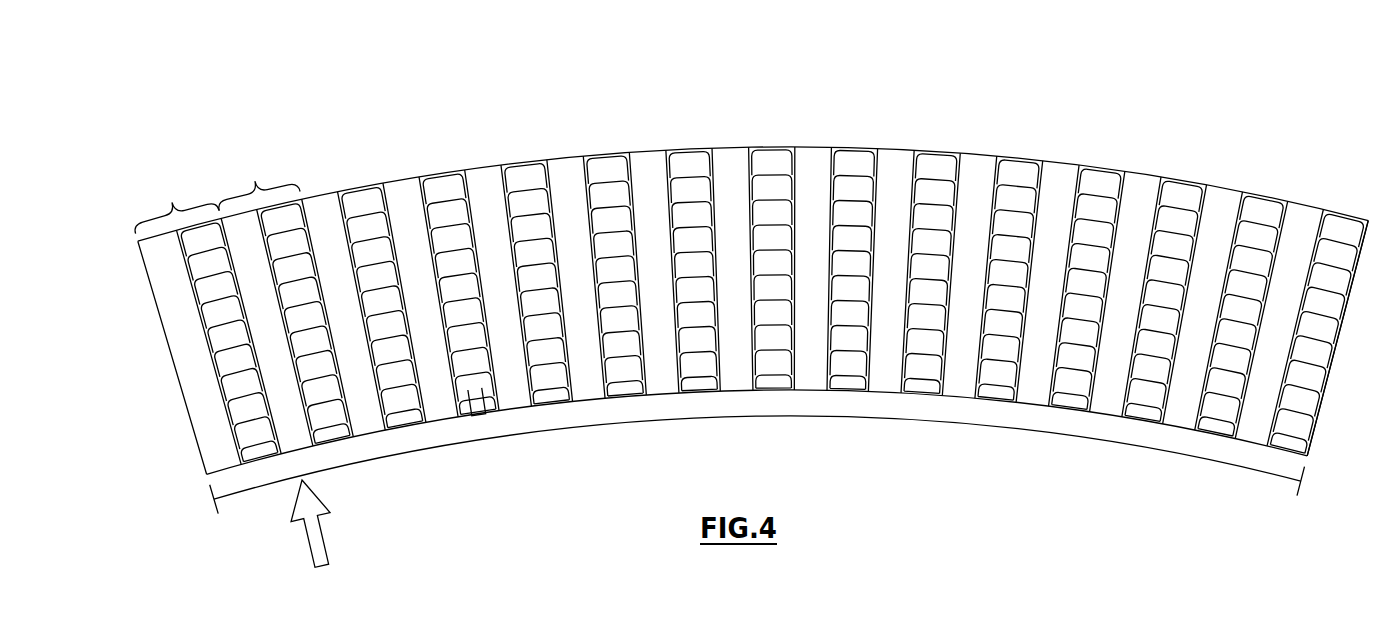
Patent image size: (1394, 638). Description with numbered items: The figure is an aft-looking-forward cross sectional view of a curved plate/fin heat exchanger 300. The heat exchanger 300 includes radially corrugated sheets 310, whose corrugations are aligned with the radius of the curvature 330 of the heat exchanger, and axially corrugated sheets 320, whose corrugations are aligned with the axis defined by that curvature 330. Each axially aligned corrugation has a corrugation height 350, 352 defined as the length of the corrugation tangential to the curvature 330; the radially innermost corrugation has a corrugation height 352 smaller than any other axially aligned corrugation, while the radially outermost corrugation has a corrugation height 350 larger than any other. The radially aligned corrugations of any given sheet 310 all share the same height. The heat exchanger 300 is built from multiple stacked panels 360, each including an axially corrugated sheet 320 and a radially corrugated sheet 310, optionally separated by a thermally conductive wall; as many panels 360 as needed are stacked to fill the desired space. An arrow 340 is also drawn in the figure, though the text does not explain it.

The plate/fin heat exchanger 300 is at (208, 94).
The radially corrugated sheet 310 is at (882, 392).
The axially corrugated sheet 320 is at (920, 390).
The curvature 330 is at (1138, 446).
The direction arrow 340 is at (338, 528).
The corrugation height 350 is at (444, 186).
The corrugation height 352 is at (479, 413).
The stacked panel 360 is at (255, 180).